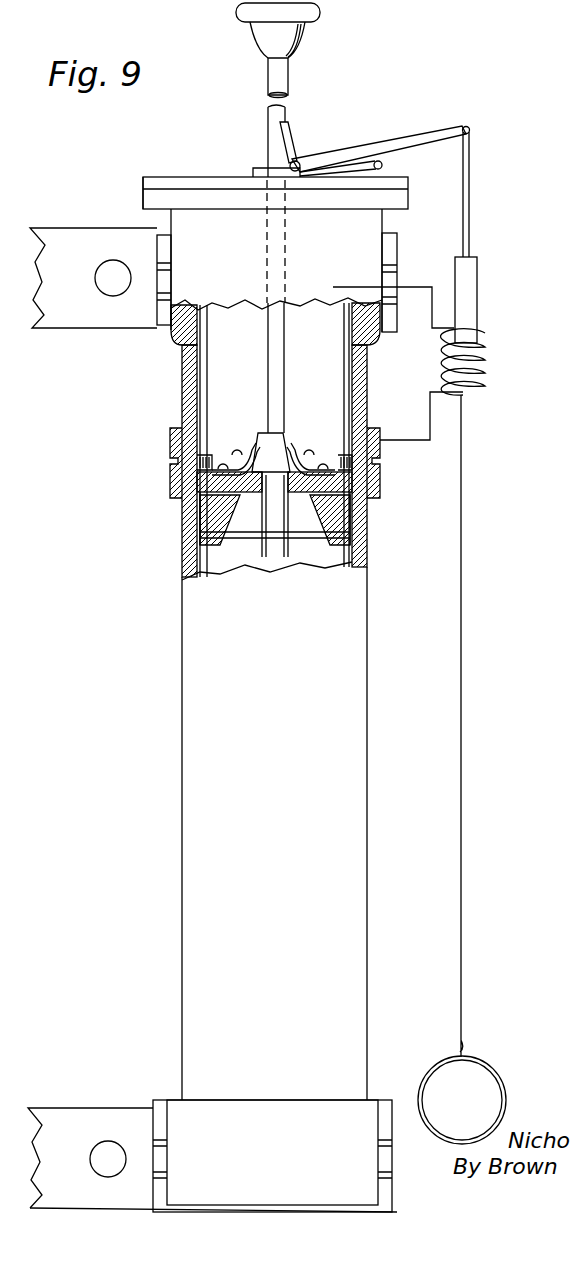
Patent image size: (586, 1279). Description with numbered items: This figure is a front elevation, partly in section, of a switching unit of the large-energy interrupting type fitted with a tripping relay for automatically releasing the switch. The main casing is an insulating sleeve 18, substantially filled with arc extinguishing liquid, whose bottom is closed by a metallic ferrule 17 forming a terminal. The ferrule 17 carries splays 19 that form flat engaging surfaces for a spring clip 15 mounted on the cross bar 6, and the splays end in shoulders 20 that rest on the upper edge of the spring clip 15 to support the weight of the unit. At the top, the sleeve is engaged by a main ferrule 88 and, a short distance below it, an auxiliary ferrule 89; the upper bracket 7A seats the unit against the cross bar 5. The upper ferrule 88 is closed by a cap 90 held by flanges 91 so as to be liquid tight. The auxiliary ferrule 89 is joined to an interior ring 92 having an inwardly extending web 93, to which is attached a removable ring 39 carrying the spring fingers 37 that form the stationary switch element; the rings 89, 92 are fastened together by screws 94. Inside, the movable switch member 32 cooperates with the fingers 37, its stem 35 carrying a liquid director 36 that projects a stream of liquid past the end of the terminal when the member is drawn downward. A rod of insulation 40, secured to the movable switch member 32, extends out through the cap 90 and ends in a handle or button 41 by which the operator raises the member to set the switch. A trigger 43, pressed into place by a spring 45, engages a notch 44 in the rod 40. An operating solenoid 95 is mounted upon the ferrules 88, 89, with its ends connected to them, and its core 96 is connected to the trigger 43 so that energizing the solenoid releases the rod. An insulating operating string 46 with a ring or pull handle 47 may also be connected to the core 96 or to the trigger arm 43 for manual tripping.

The handle or button 41 is at (310, 20).
The rod of insulation 40 is at (290, 78).
The catch or notch 44 is at (290, 110).
The detent or trigger 43 is at (442, 140).
The spring 45 is at (390, 171).
The cap 90 is at (207, 177).
The flanges 91 is at (152, 183).
The bracket 7A is at (386, 250).
The cross bar or connector 5 is at (64, 324).
The main ferrule 88 is at (176, 336).
The core 96 is at (470, 291).
The operating solenoid 95 is at (488, 337).
The string or operating cable 46 is at (461, 940).
The ring or pull handle 47 is at (488, 1067).
The screws 94 is at (172, 456).
The removable ring 39 is at (380, 461).
The auxiliary ferrule 89 is at (176, 479).
The movable switch member 32 is at (276, 446).
The spring fingers 37 is at (251, 441).
The interior ring 92 is at (352, 487).
The web 93 is at (367, 505).
The liquid director 36 is at (332, 532).
The stem 35 is at (276, 548).
The sleeve 18 is at (186, 646).
The ferrule 17 is at (330, 1160).
The shoulders 20 is at (162, 1106).
The splays 19 is at (392, 1110).
The spring clip 15 is at (380, 1196).
The cross bar or connector 6 is at (76, 1112).